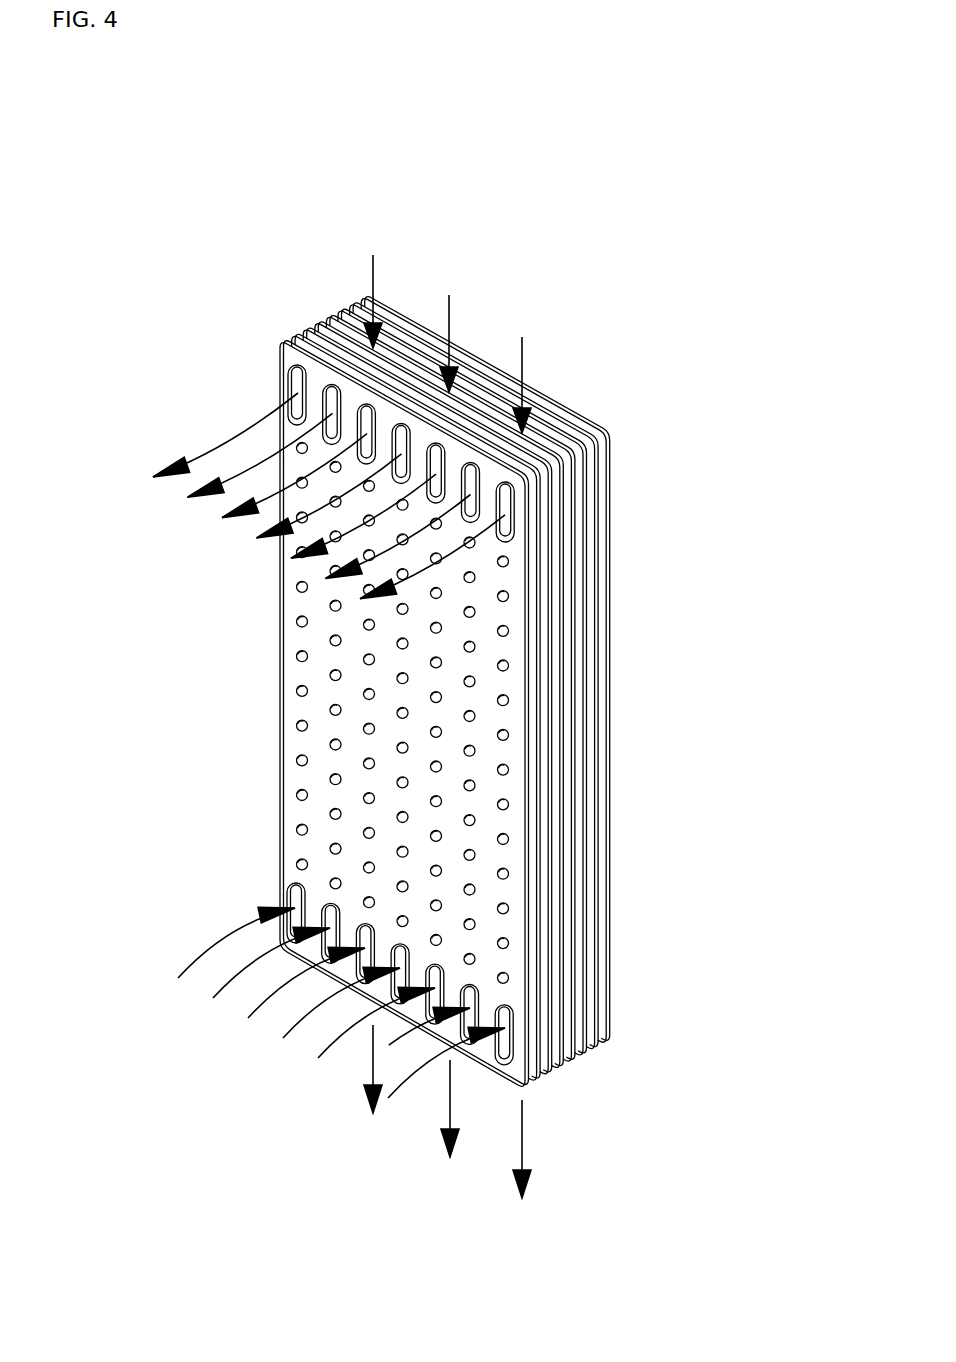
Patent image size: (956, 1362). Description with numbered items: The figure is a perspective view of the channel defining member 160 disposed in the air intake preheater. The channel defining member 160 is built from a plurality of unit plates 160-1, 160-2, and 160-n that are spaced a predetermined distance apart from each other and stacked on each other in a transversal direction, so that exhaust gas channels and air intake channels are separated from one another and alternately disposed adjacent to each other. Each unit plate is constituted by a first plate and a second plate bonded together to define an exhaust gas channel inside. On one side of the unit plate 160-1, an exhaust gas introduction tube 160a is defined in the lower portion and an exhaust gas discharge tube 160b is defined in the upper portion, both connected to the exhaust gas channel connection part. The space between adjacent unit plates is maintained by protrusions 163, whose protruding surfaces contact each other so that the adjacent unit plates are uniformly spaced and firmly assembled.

The channel defining member 160 is at (133, 180).
The unit plate 160-1 is at (282, 337).
The unit plate 160-2 is at (294, 322).
The unit plate 160-n is at (358, 291).
The exhaust gas introduction tube 160a is at (291, 898).
The exhaust gas discharge tube 160b is at (288, 392).
The protrusions 163 is at (297, 657).